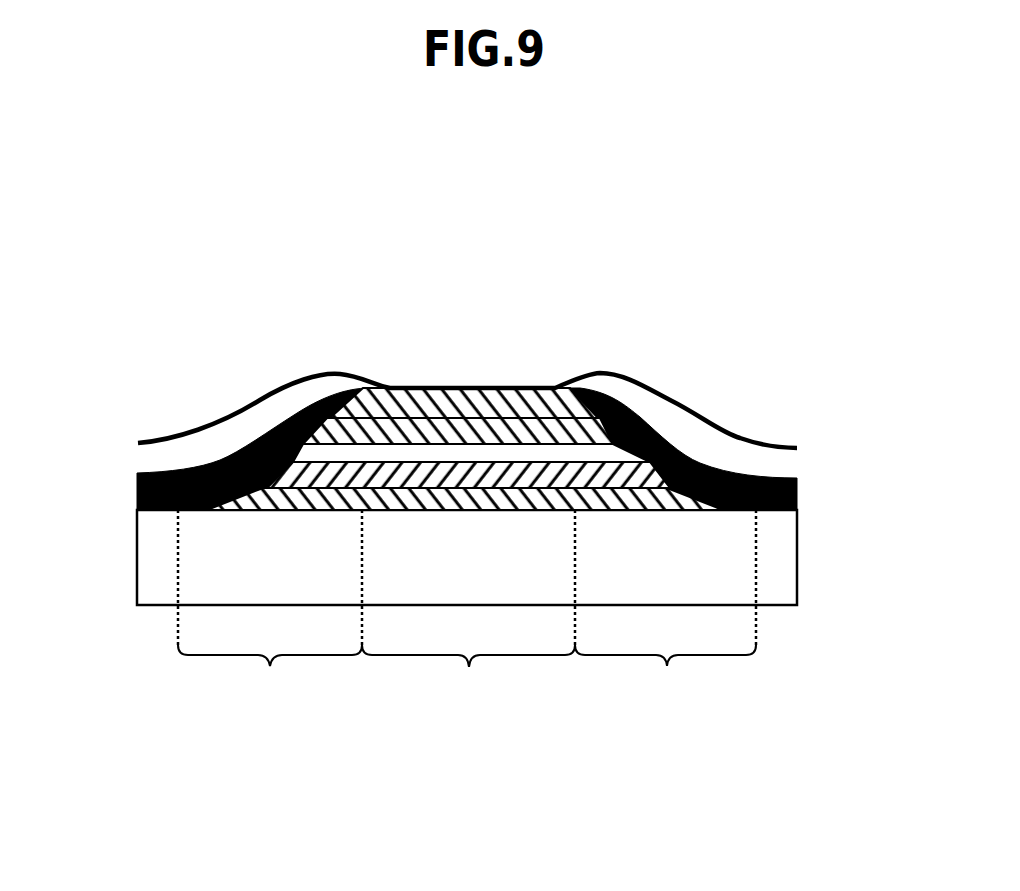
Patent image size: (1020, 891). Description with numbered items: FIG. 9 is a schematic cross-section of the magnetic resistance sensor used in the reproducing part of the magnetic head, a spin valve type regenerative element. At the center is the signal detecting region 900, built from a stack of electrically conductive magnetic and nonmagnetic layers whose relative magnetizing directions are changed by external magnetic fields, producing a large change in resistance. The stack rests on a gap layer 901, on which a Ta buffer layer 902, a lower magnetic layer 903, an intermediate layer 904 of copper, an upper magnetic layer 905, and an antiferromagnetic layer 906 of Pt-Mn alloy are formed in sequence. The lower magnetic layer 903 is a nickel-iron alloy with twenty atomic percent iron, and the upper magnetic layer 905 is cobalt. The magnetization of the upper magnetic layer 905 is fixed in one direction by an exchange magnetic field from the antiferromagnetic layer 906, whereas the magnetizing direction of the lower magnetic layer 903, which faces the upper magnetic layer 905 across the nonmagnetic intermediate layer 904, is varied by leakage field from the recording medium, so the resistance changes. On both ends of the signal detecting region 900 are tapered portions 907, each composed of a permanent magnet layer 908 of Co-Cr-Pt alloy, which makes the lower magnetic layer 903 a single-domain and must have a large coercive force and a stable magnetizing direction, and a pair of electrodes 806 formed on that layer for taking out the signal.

The electrodes 806 is at (267, 408).
The permanent magnet layer 908 is at (223, 460).
The signal detecting region 900 is at (468, 676).
The gap layer 901 is at (775, 563).
The Ta buffer layer 902 is at (520, 500).
The lower magnetic layer 903 is at (515, 470).
The intermediate layer 904 is at (475, 455).
The upper magnetic layer 905 is at (443, 440).
The antiferromagnetic layer 906 is at (408, 387).
The tapered portions 907 is at (467, 609).